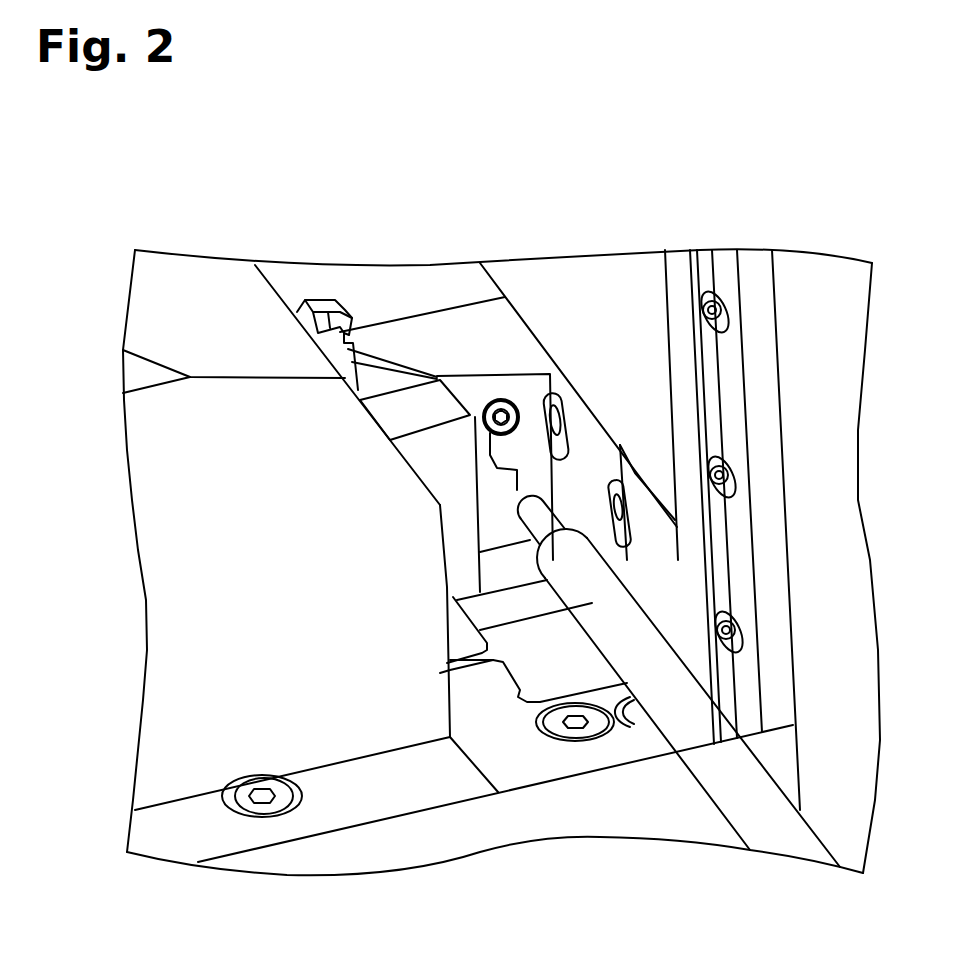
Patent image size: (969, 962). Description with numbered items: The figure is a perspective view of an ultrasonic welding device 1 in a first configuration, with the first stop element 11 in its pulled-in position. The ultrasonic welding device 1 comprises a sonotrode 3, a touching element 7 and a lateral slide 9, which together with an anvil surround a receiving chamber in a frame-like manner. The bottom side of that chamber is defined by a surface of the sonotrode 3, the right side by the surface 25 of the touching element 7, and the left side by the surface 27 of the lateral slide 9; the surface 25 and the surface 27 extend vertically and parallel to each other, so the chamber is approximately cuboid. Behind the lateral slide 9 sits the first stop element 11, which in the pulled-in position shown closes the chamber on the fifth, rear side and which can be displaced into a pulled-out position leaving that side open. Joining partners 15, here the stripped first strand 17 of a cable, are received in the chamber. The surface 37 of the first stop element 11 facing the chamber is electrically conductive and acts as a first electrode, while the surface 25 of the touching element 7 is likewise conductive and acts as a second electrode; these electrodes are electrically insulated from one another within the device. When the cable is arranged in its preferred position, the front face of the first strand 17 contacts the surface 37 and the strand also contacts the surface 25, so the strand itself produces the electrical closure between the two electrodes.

The ultrasonic welding device 1 is at (130, 214).
The sonotrode 3 is at (508, 596).
The touching element 7 is at (600, 447).
The lateral slide 9 is at (390, 413).
The first stop element 11 is at (398, 378).
The joining partners 15 is at (800, 845).
The first strand 17 is at (548, 533).
The surface of the touching element 25 is at (577, 437).
The surface of the lateral slide 27 is at (473, 387).
The surface of the first stop element 37 is at (503, 388).